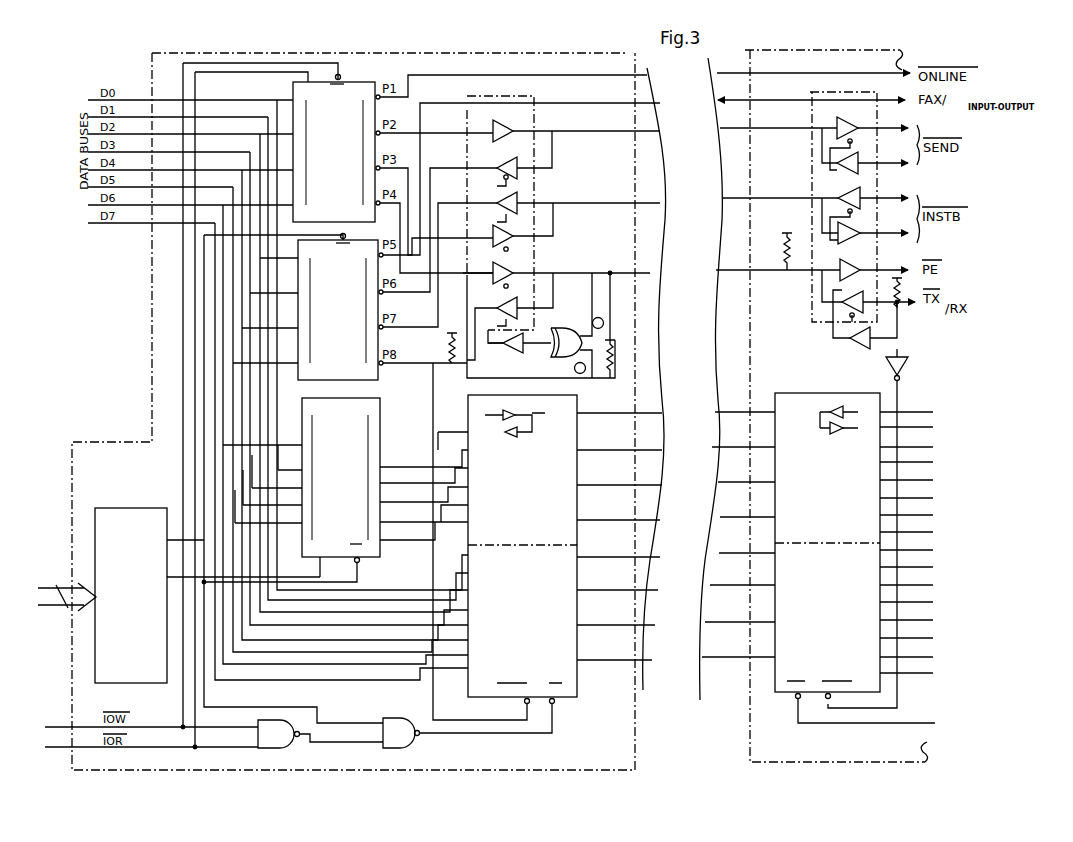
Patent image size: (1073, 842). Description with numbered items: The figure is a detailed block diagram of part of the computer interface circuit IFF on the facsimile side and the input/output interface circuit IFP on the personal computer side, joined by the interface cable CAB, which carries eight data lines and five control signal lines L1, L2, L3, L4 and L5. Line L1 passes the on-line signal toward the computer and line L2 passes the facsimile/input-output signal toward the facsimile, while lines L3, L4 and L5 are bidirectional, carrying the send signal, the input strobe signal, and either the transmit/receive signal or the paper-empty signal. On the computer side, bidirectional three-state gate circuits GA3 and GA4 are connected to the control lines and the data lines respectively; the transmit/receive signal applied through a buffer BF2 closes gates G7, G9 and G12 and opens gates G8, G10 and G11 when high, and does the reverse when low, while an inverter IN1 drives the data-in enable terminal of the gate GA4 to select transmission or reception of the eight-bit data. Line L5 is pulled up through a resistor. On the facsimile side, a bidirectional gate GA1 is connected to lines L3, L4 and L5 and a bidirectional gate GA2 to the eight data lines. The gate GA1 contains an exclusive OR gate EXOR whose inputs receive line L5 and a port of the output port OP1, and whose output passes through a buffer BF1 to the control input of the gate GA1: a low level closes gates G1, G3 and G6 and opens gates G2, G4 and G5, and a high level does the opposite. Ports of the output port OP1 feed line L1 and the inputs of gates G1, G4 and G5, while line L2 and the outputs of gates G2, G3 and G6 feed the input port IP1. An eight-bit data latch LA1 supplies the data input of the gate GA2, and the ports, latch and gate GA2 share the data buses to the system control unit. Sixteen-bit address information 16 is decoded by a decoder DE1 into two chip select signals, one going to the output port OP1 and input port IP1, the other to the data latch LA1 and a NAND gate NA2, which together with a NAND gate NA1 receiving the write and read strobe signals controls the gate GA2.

The computer interface circuit IFF is at (156, 314).
The input/output interface circuit IFP is at (751, 358).
The interface cable CAB is at (683, 379).
The output port OP1 is at (359, 83).
The input port IP1 is at (383, 382).
The 8-bit data latch LA1 is at (370, 566).
The decoder DE1 is at (127, 504).
The address buses 16 is at (62, 590).
The NAND gate NA1 is at (285, 715).
The NAND gate NA2 is at (402, 716).
The bidirectional gate GA1 is at (561, 219).
The bidirectional gate GA2 is at (576, 395).
The bidirectional gate circuit GA3 is at (862, 188).
The bidirectional gate circuit GA4 is at (795, 393).
The gate G1 is at (504, 125).
The gate G2 is at (524, 158).
The gate G3 is at (578, 201).
The gate G4 is at (523, 227).
The gate G5 is at (556, 270).
The gate G6 is at (510, 316).
The gate G7 is at (872, 124).
The gate G8 is at (869, 157).
The gate G9 is at (866, 190).
The gate G10 is at (869, 227).
The gate G11 is at (874, 264).
The gate G12 is at (878, 301).
The exclusive OR gate EXOR is at (563, 325).
The buffer BF1 is at (510, 351).
The buffer BF2 is at (856, 345).
The inverter IN1 is at (903, 381).
The control signal line L1 is at (813, 64).
The control signal line L2 is at (811, 91).
The control signal line L3 is at (778, 120).
The control signal line L4 is at (780, 189).
The control signal line L5 is at (778, 251).